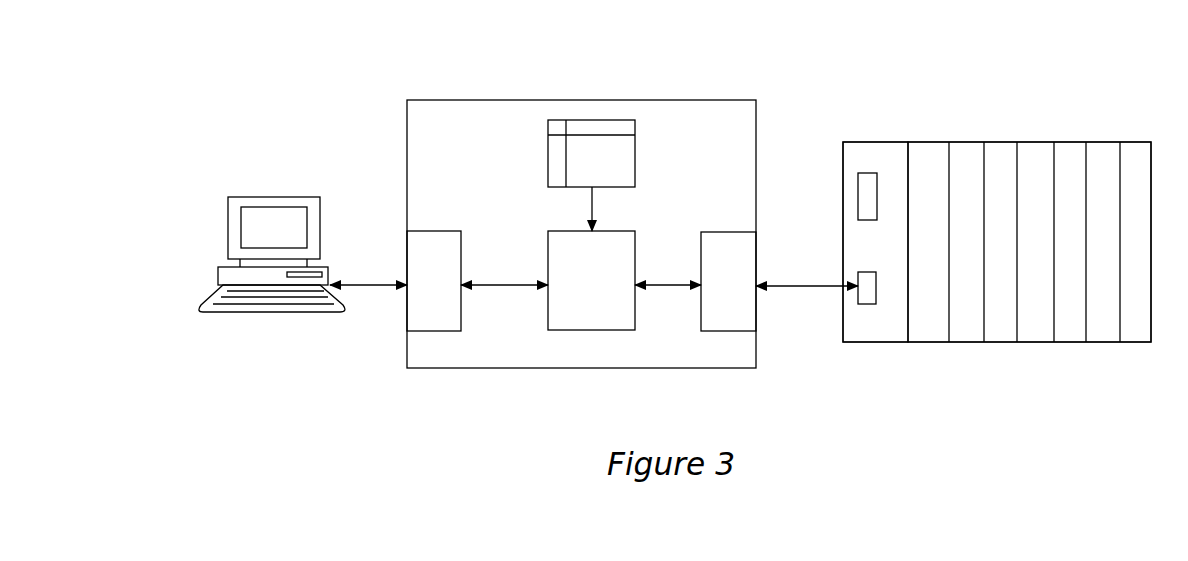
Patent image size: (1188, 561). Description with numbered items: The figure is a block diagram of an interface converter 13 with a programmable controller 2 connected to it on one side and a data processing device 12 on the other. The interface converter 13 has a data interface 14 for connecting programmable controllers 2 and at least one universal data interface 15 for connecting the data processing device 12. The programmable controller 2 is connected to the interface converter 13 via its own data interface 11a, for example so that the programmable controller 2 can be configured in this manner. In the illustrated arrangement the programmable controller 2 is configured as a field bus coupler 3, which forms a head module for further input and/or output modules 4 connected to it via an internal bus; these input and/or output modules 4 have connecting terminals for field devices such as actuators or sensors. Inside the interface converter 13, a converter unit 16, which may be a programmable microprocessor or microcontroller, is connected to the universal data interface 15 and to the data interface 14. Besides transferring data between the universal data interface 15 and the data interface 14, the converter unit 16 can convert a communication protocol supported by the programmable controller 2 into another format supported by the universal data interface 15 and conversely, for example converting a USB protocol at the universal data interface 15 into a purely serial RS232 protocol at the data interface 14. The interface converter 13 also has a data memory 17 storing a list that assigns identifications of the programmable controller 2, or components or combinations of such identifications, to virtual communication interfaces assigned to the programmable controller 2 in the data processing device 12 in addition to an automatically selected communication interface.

The programmable controller 2 is at (988, 221).
The field bus coupler 3 is at (866, 280).
The input and/or output modules 4 is at (1065, 342).
The data interface 11a is at (863, 297).
The data processing device 12 is at (248, 197).
The interface converter 13 is at (407, 128).
The data interface 14 is at (728, 281).
The universal data interface 15 is at (434, 281).
The converter unit 16 is at (591, 280).
The data memory 17 is at (591, 153).